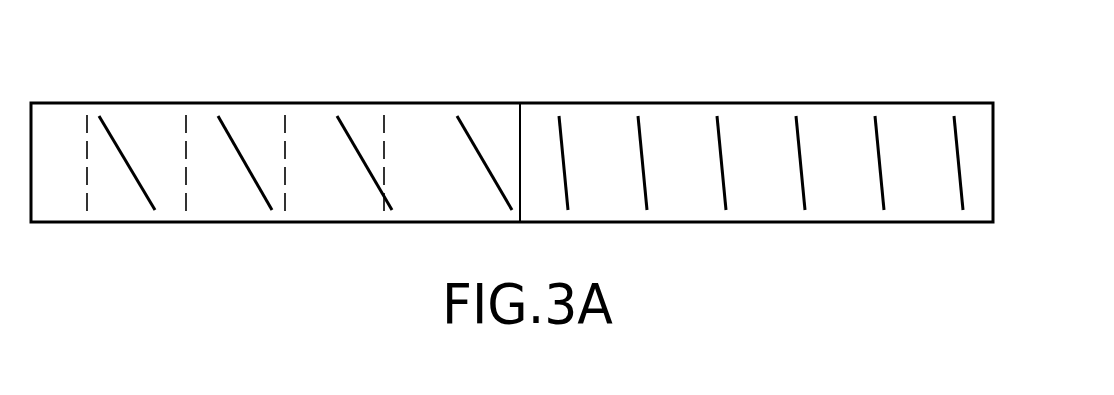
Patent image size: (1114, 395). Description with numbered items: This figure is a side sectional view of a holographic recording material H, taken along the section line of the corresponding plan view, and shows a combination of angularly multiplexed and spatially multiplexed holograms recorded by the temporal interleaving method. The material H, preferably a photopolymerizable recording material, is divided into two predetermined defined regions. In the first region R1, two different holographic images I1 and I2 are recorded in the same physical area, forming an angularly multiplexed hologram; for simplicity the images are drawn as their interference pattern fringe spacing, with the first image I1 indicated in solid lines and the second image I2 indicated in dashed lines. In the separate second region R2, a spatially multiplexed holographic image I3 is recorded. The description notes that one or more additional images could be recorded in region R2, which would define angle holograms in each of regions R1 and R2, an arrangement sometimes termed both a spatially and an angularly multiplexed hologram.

The holographic recording material H is at (1008, 107).
The first predetermined defined region R1 is at (207, 125).
The second predetermined defined region R2 is at (835, 120).
The first holographic image I1 is at (343, 138).
The second holographic image I2 is at (396, 139).
The third holographic image I3 is at (645, 134).